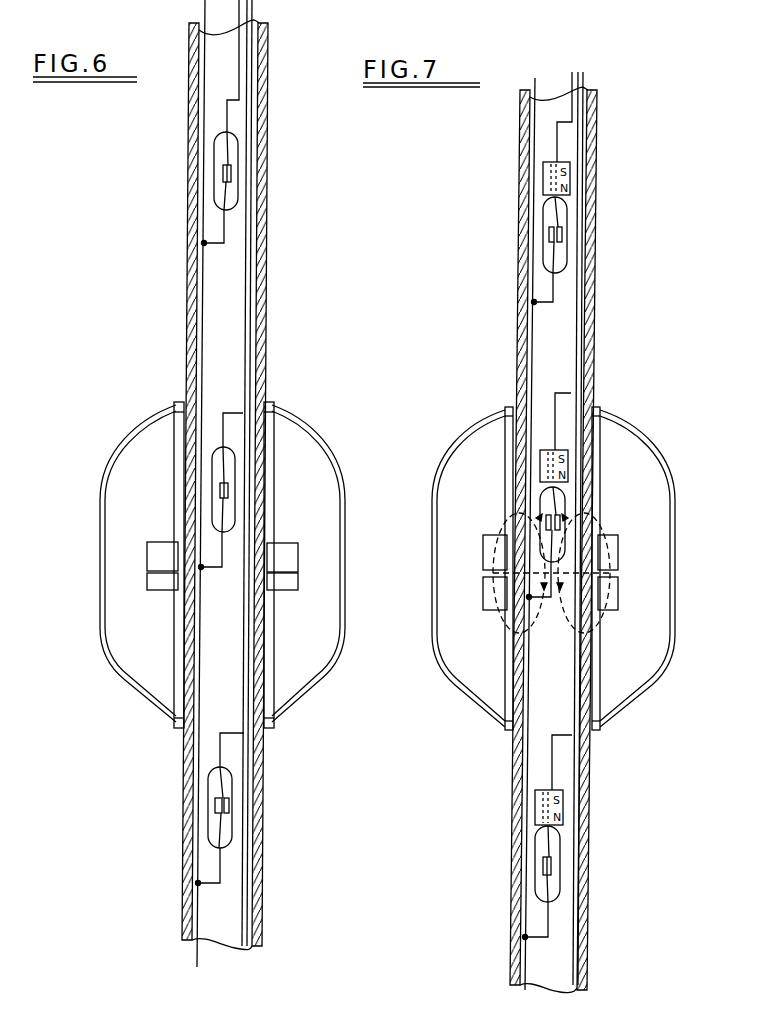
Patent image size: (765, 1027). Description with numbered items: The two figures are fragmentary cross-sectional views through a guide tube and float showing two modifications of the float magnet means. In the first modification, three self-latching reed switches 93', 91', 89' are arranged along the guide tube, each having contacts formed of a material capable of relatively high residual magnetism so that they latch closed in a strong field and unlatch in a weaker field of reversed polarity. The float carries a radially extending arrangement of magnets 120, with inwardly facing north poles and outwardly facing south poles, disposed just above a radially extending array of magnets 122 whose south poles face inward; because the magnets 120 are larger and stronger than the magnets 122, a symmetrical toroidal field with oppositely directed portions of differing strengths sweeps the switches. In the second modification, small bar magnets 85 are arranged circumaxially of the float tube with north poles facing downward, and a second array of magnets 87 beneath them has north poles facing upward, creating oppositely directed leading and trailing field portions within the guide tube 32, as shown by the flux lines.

In FIG. 6, the self-latching reed switch 93' is at (259, 123).
In FIG. 6, the self-latching reed switch 91' is at (151, 491).
In FIG. 6, the self-latching reed switch 89' is at (261, 809).
In FIG. 6, the radially extending arrangement of magnets 120 is at (283, 543).
In FIG. 6, the radially extending array of magnets 122 is at (162, 590).
In FIG. 7, the small bar magnets 85 is at (483, 548).
In FIG. 7, the small magnets 87 is at (483, 590).
In FIG. 7, the guide tube 32 is at (588, 760).